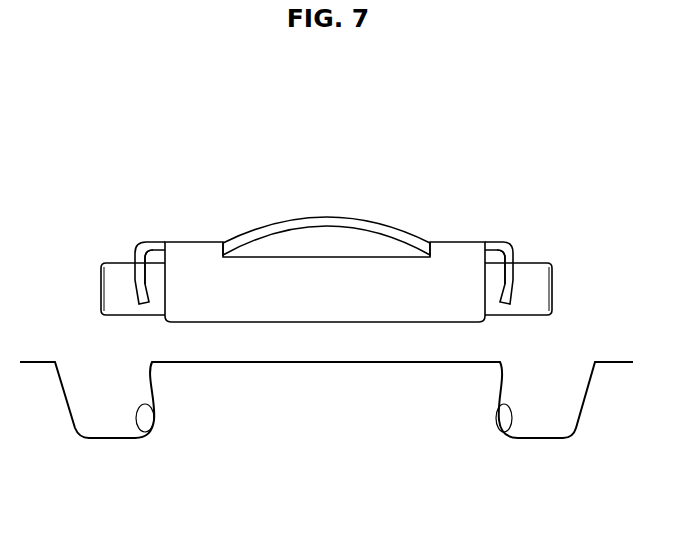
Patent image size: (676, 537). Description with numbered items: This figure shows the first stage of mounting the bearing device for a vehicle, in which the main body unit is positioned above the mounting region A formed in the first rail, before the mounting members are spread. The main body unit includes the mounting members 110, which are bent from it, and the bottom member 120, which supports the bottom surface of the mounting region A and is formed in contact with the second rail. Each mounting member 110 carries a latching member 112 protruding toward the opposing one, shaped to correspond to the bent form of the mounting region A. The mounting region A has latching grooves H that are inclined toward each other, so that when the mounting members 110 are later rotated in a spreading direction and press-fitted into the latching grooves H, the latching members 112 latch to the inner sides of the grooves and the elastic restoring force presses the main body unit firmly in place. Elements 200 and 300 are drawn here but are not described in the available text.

The mounting member 110 is at (136, 268).
The latching member 112 is at (157, 262).
The bottom member 120 is at (542, 293).
The main body 200 is at (282, 273).
The dome cover 300 is at (343, 220).
The mounting region A is at (109, 413).
The latching groove H is at (138, 425).